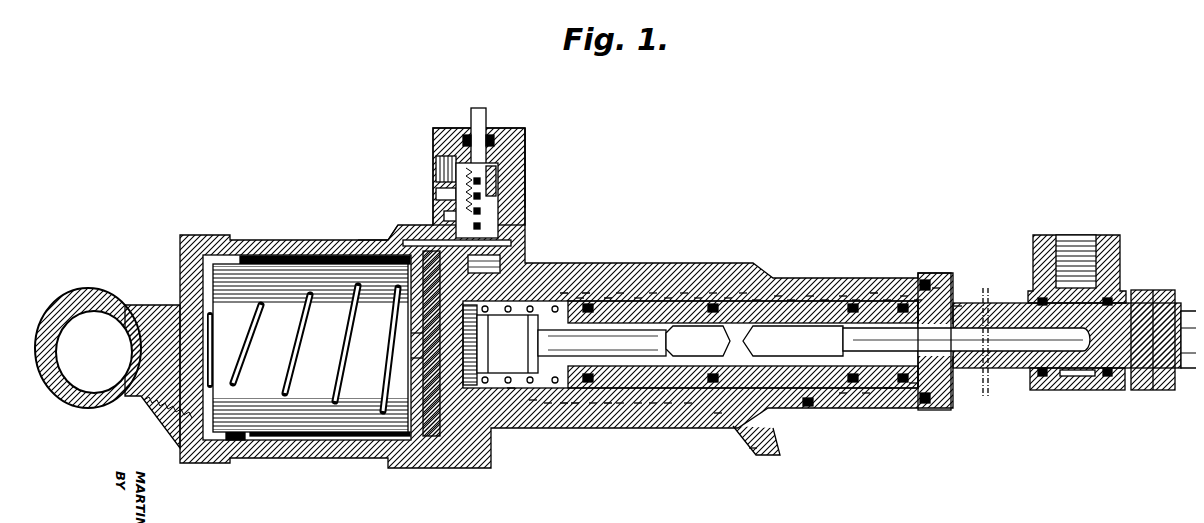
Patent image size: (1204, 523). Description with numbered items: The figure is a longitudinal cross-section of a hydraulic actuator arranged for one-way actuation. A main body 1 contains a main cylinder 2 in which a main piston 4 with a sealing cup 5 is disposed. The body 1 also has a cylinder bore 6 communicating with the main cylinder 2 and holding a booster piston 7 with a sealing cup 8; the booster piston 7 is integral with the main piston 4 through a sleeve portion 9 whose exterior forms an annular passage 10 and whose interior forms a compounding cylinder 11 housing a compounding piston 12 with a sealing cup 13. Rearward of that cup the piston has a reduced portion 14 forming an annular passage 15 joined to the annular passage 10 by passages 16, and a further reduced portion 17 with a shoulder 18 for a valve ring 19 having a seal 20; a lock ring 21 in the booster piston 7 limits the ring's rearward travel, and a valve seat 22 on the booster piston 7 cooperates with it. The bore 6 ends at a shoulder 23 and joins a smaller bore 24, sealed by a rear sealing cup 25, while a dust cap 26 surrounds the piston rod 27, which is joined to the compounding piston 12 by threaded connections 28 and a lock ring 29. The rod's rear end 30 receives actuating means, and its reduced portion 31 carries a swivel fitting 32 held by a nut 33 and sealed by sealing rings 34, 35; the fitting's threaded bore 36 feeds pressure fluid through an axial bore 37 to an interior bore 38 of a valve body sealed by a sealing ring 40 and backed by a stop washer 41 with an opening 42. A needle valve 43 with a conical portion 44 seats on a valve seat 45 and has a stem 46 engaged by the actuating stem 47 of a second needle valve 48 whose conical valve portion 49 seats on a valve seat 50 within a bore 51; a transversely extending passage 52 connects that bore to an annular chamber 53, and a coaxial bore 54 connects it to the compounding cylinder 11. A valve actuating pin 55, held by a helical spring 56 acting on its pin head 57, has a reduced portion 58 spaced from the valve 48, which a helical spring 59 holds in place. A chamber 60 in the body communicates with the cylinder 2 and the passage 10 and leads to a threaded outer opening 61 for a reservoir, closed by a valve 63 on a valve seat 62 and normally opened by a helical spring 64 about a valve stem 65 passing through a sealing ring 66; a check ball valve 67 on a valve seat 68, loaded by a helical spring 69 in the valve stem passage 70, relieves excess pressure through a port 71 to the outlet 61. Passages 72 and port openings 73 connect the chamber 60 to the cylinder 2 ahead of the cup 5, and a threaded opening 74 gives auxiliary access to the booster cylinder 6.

The main body 1 is at (250, 453).
The main cylinder 2 is at (297, 432).
The main piston 4 is at (425, 445).
The sealing cup 5 is at (158, 405).
The cylinder bore 6 is at (645, 395).
The booster piston 7 is at (612, 395).
The sealing cup 8 is at (630, 395).
The sleeve portion 9 is at (540, 395).
The annular passage 10 is at (556, 285).
The compounding cylinder 11 is at (525, 392).
The compounding piston 12 is at (578, 285).
The sealing cup 13 is at (572, 290).
The reduced portion 14 is at (630, 290).
The annular passage 15 is at (612, 285).
The passages 16 is at (600, 290).
The further reduced portion 17 is at (705, 285).
The shoulder 18 is at (660, 290).
The valve ring 19 is at (690, 290).
The seal 20 is at (735, 285).
The lock ring 21 is at (720, 290).
The valve seat 22 is at (676, 285).
The shoulder 23 is at (748, 292).
The smaller bore 24 is at (848, 292).
The sealing cup 25 is at (910, 292).
The dust cap 26 is at (928, 280).
The piston rod 27 is at (950, 298).
The threaded connections 28 is at (879, 292).
The lock ring 29 is at (896, 288).
The rear end 30 is at (1185, 308).
The reduced portion 31 is at (1080, 378).
The swivel fitting 32 is at (1030, 235).
The nut 33 is at (1135, 284).
The sealing ring 34 is at (1034, 370).
The sealing ring 35 is at (1100, 370).
The threaded bore 36 is at (1095, 235).
The axial bore 37 is at (1012, 342).
The interior bore 38 is at (835, 385).
The sealing ring 40 is at (858, 385).
The stop washer 41 is at (905, 375).
The opening 42 is at (925, 400).
The needle valve 43 is at (793, 341).
The conical portion 44 is at (835, 288).
The valve seat 45 is at (817, 292).
The stem 46 is at (710, 405).
The actuating stem 47 is at (660, 395).
The needle valve 48 is at (698, 341).
The conical valve portion 49 is at (783, 292).
The valve seat 50 is at (802, 288).
The bore 51 is at (770, 288).
The transversely extending passage 52 is at (680, 395).
The annular chamber 53 is at (880, 380).
The coaxial bore 54 is at (585, 395).
The valve actuating pin 55 is at (420, 351).
The helical spring 56 is at (503, 382).
The pin head 57 is at (420, 326).
The reduced portion 58 is at (602, 343).
The helical spring 59 is at (645, 285).
The chamber 60 is at (492, 255).
The threaded outer opening 61 is at (435, 158).
The valve seat 62 is at (492, 176).
The valve 63 is at (492, 196).
The helical spring 64 is at (432, 163).
The valve stem 65 is at (466, 102).
The sealing ring 66 is at (458, 132).
The check ball valve 67 is at (440, 208).
The valve seat 68 is at (505, 232).
The helical spring 69 is at (498, 165).
The valve stem passage 70 is at (518, 135).
The port 71 is at (435, 188).
The passages 72 is at (388, 238).
The port openings 73 is at (372, 232).
The threaded opening 74 is at (745, 442).